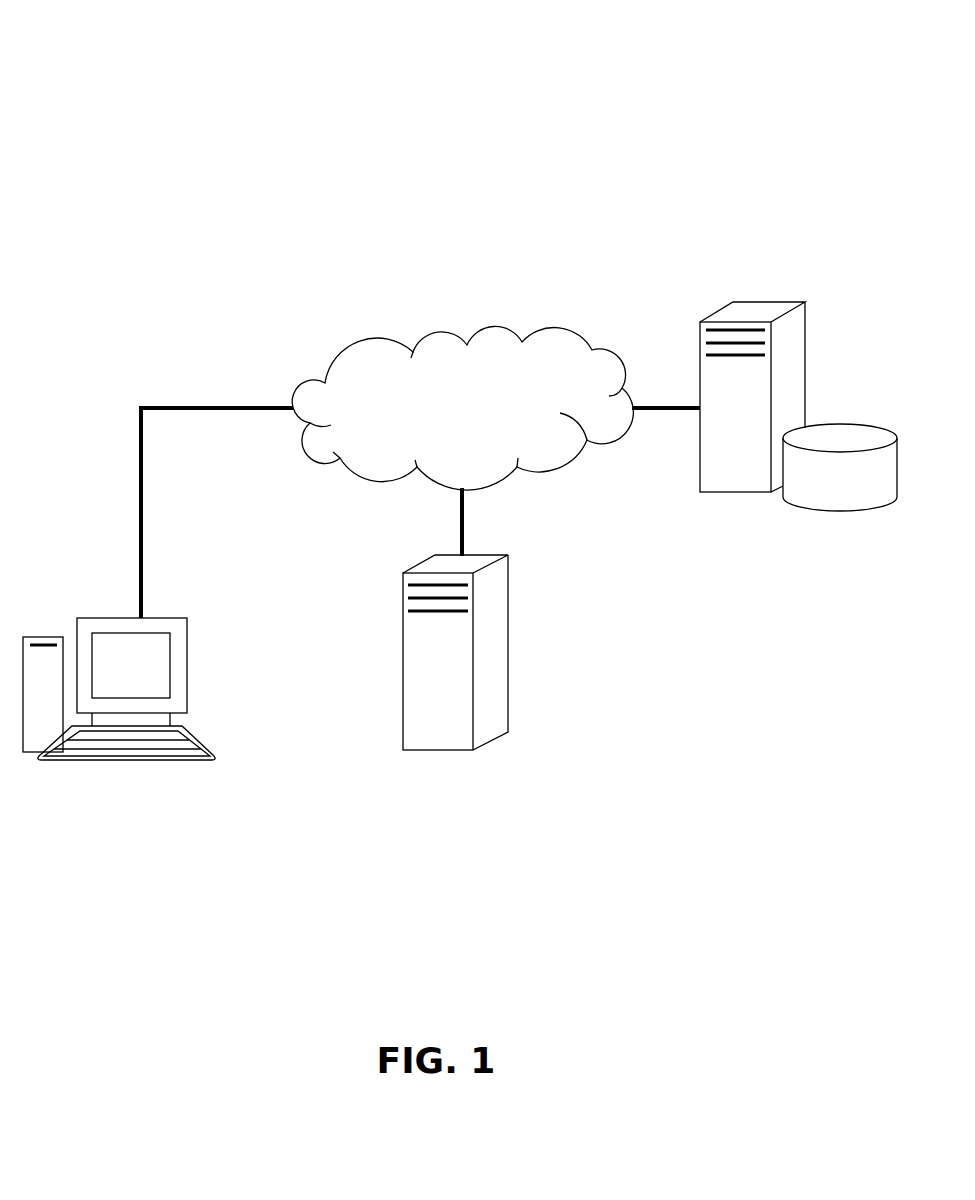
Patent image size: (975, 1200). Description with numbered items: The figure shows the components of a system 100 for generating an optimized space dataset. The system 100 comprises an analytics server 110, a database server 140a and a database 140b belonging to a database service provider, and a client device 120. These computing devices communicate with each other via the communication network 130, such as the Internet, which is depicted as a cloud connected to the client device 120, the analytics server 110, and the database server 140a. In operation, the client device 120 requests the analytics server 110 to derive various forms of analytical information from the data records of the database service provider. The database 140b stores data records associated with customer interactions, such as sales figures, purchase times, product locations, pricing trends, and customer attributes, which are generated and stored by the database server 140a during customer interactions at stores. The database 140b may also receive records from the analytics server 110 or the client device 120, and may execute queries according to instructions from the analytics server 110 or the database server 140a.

The system 100 is at (150, 51).
The analytics server 110 is at (455, 652).
The client device 120 is at (119, 689).
The communication network 130 is at (462, 408).
The database server 140a is at (752, 397).
The database 140b is at (840, 467).